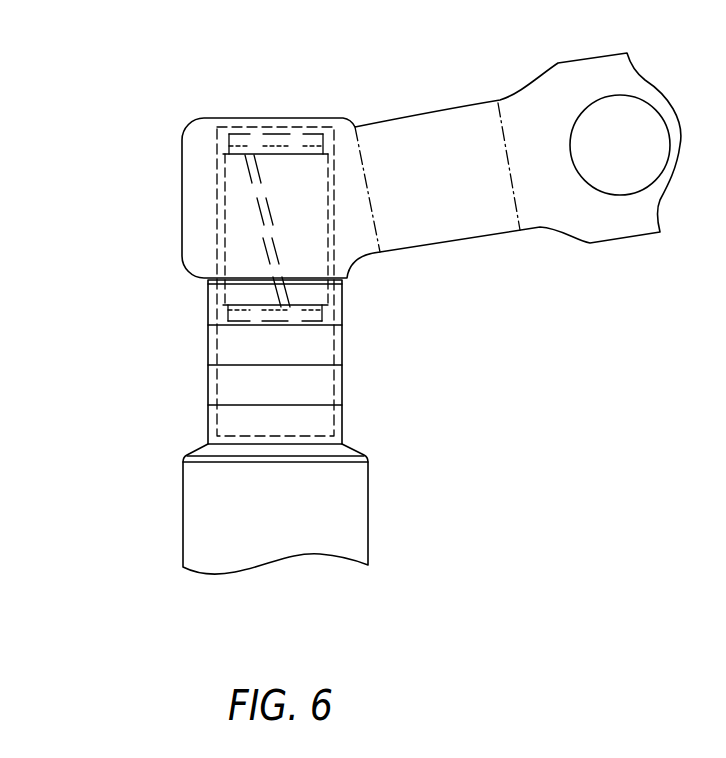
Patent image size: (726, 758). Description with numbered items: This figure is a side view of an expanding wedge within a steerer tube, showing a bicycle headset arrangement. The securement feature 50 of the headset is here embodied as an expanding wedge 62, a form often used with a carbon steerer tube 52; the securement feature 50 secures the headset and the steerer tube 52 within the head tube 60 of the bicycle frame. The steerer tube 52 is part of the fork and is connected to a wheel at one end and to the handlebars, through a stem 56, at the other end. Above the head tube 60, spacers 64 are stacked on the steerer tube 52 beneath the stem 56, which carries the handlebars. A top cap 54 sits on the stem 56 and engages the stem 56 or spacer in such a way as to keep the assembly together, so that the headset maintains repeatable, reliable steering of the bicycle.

The securement feature 50 is at (370, 187).
The expanding wedge 62 is at (283, 225).
The steerer tube 52 is at (329, 127).
The top cap 54 is at (233, 127).
The stem 56 is at (460, 118).
The spacers 64 is at (233, 390).
The head tube 60 is at (363, 507).